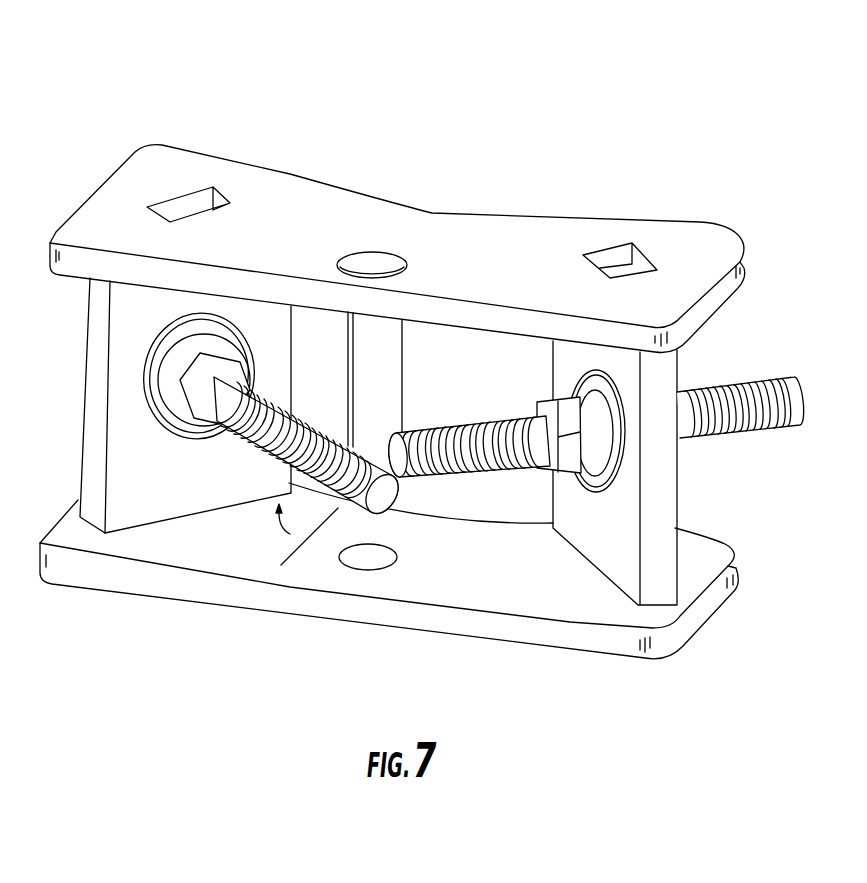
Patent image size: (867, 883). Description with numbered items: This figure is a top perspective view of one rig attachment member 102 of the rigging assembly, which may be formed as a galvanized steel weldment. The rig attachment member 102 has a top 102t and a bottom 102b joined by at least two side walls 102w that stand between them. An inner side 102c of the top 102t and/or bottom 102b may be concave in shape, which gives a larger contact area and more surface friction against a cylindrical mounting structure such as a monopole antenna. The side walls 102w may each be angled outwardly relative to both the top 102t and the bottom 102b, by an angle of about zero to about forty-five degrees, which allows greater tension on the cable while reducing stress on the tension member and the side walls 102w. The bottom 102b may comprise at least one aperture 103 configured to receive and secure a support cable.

The rig attachment member 102 is at (398, 377).
The top 102t is at (397, 243).
The bottom 102b is at (212, 603).
The side wall 102w is at (120, 448).
The inner side 102c is at (423, 212).
The aperture 103 is at (468, 426).